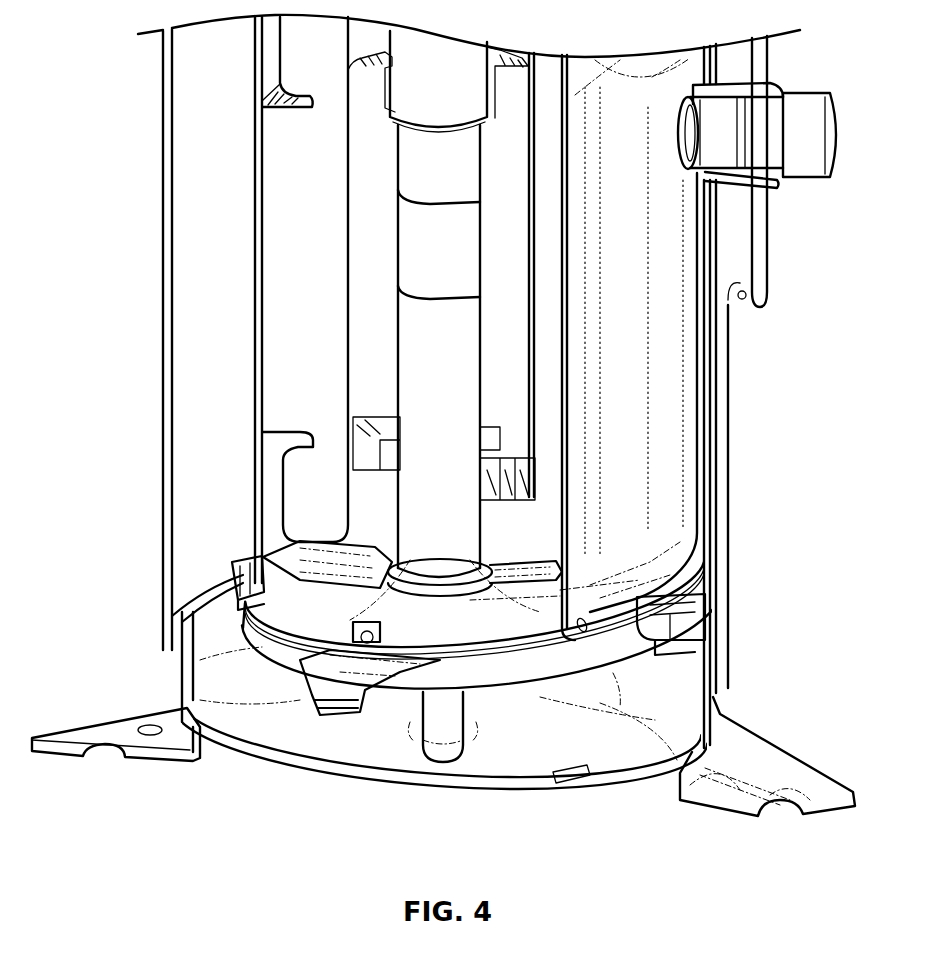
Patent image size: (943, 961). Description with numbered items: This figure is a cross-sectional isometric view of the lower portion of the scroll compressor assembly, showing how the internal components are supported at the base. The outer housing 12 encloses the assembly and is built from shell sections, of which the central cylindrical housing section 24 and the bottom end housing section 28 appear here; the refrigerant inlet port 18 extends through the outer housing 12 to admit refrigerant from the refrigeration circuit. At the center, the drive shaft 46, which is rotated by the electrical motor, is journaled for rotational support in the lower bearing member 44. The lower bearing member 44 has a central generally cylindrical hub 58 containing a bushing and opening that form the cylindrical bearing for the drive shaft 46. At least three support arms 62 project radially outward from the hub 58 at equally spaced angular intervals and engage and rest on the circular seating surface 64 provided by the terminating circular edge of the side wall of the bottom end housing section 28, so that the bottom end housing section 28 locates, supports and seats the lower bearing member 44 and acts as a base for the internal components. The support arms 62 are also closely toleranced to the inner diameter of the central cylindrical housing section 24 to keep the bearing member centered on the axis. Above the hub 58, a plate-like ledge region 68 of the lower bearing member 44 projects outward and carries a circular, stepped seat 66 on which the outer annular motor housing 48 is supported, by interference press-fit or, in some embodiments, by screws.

The outer housing 12 is at (128, 488).
The refrigerant inlet port 18 is at (771, 183).
The central cylindrical housing section 24 is at (166, 604).
The bottom end housing section 28 is at (247, 752).
The lower bearing member 44 is at (357, 750).
The drive shaft 46 is at (423, 333).
The outer annular motor housing 48 is at (255, 282).
The central hub 58 is at (455, 593).
The support arms 62 is at (680, 590).
The circular seating surface 64 is at (690, 630).
The circular seat 66 is at (230, 561).
The plate-like ledge region 68 is at (300, 689).